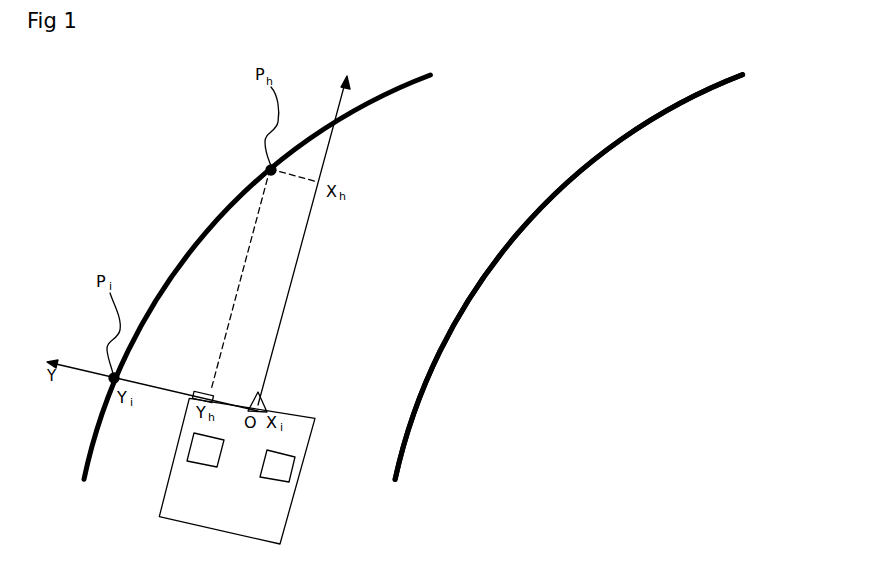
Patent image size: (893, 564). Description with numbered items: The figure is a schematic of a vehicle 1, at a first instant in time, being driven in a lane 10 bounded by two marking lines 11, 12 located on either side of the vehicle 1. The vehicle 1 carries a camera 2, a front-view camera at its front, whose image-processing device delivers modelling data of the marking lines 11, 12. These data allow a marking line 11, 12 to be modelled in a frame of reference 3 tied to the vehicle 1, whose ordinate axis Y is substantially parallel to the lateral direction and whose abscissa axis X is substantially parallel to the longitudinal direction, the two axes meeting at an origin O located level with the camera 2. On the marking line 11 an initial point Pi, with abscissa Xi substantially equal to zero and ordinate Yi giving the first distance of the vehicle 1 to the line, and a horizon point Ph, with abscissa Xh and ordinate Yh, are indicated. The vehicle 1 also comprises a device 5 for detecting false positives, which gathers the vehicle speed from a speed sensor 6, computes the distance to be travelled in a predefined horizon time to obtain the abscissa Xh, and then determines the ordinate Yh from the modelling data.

The vehicle 1 is at (293, 513).
The camera 2 is at (262, 400).
The frame of reference 3 is at (337, 103).
The device for detecting false positives 5 is at (293, 468).
The speed sensor 6 is at (192, 434).
The lane 10 is at (652, 97).
The marking line 11 is at (177, 270).
The marking line 12 is at (562, 195).